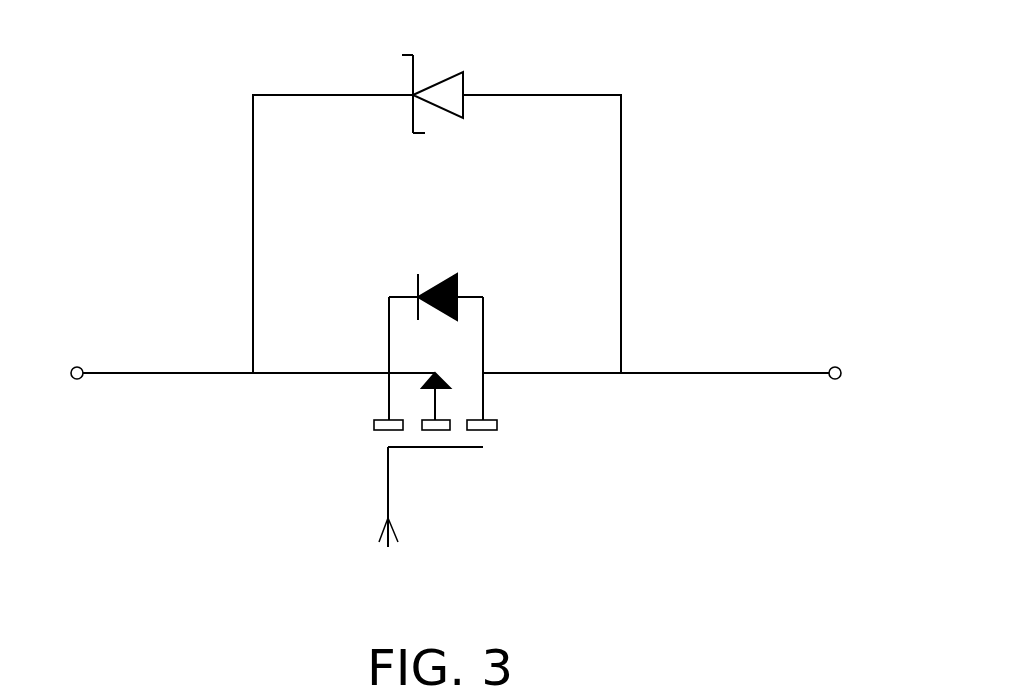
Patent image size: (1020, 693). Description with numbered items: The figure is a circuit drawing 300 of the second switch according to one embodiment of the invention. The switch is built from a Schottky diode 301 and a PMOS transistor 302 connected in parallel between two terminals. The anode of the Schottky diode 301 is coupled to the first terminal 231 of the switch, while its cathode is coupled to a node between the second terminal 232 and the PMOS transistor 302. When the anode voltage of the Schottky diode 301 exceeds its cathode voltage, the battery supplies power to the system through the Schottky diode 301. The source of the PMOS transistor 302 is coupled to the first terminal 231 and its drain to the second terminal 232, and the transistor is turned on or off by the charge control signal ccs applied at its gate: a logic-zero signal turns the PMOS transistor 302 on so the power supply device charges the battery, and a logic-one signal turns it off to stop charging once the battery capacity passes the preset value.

The circuit drawing 300 is at (183, 52).
The Schottky diode 301 is at (463, 82).
The PMOS transistor 302 is at (460, 430).
The first terminal 231 is at (55, 372).
The second terminal 232 is at (859, 372).